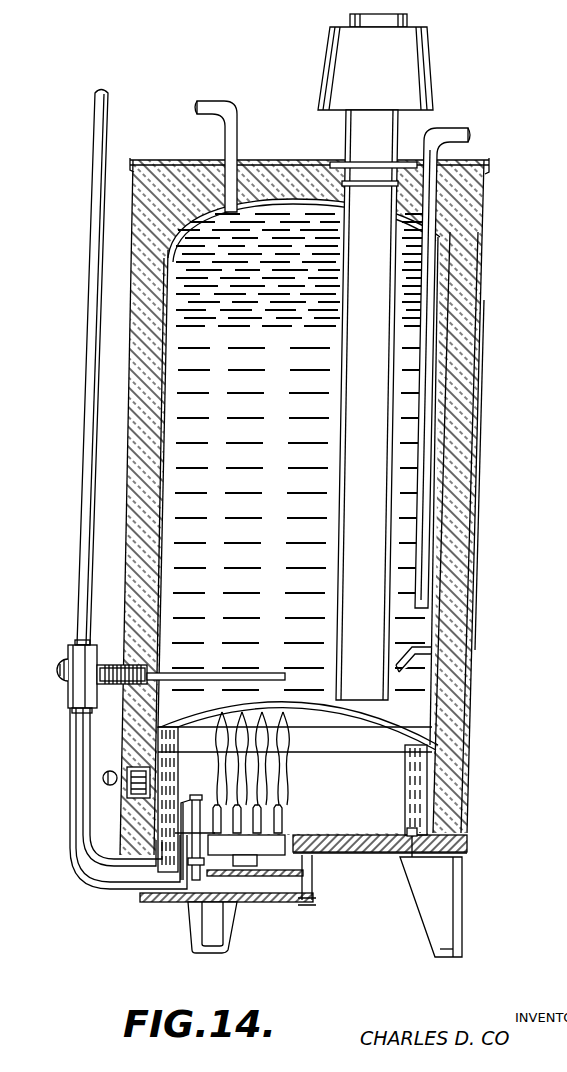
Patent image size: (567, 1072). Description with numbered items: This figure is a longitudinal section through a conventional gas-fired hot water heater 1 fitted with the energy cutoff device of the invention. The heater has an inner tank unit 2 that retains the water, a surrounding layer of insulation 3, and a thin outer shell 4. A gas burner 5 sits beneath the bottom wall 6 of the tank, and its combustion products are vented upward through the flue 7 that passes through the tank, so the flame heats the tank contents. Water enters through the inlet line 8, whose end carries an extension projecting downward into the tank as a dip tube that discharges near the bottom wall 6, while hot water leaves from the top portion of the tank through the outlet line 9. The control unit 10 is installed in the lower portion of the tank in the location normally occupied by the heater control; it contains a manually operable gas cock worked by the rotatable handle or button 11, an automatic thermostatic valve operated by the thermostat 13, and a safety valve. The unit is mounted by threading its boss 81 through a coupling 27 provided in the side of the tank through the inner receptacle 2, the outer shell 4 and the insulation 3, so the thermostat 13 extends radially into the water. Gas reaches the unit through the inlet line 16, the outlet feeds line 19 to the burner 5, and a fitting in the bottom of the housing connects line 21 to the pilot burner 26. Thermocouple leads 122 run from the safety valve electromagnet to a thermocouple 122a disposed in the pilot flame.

The hot water heater 1 is at (485, 393).
The inner tank unit 2 is at (437, 625).
The layer of insulation 3 is at (456, 511).
The outer shell 4 is at (479, 550).
The gas burner 5 is at (288, 826).
The bottom wall 6 is at (284, 703).
The flue 7 is at (345, 128).
The inlet line 8 is at (452, 127).
The outlet line 9 is at (218, 101).
The unit 10 is at (66, 703).
The handle or button 11 is at (60, 686).
The thermostat 13 is at (234, 672).
The inlet line 16 is at (79, 601).
The line 19 is at (197, 880).
The line 21 is at (98, 852).
The pilot burner 26 is at (203, 797).
The coupling 27 is at (142, 664).
The boss 81 is at (115, 664).
The thermocouple leads 122 is at (90, 890).
The thermocouple 122a is at (184, 802).